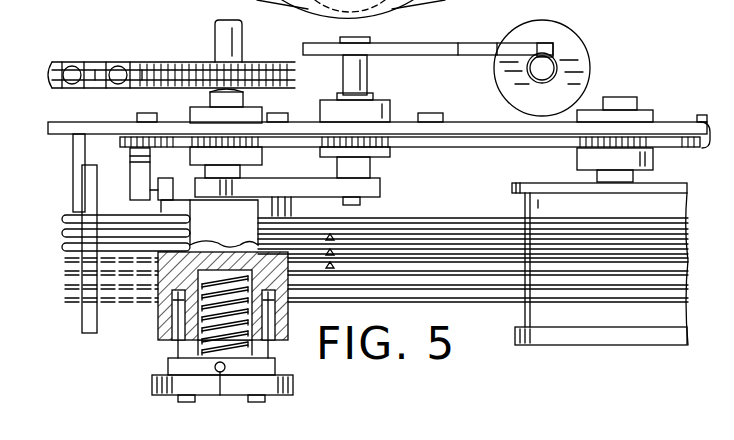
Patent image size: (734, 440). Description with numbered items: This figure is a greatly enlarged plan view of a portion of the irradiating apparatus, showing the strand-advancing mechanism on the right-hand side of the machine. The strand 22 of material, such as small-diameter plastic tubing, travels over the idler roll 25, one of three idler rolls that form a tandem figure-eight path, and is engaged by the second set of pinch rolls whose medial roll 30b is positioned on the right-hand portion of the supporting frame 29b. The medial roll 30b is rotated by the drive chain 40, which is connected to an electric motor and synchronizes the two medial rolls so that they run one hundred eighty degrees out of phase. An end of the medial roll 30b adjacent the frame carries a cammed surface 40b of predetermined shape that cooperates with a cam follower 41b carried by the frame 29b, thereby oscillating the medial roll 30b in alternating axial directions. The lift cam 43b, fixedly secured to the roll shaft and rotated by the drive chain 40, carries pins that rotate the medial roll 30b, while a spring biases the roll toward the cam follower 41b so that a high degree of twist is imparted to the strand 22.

The strand 22 is at (104, 0).
The drive chain 40 is at (72, 62).
The supporting frame 29b is at (708, 136).
The cam follower 41b is at (132, 177).
The cammed surface 40b is at (250, 187).
The idler roll 25 is at (686, 348).
The medial roll 30b is at (160, 343).
The lift cam 43b is at (172, 393).